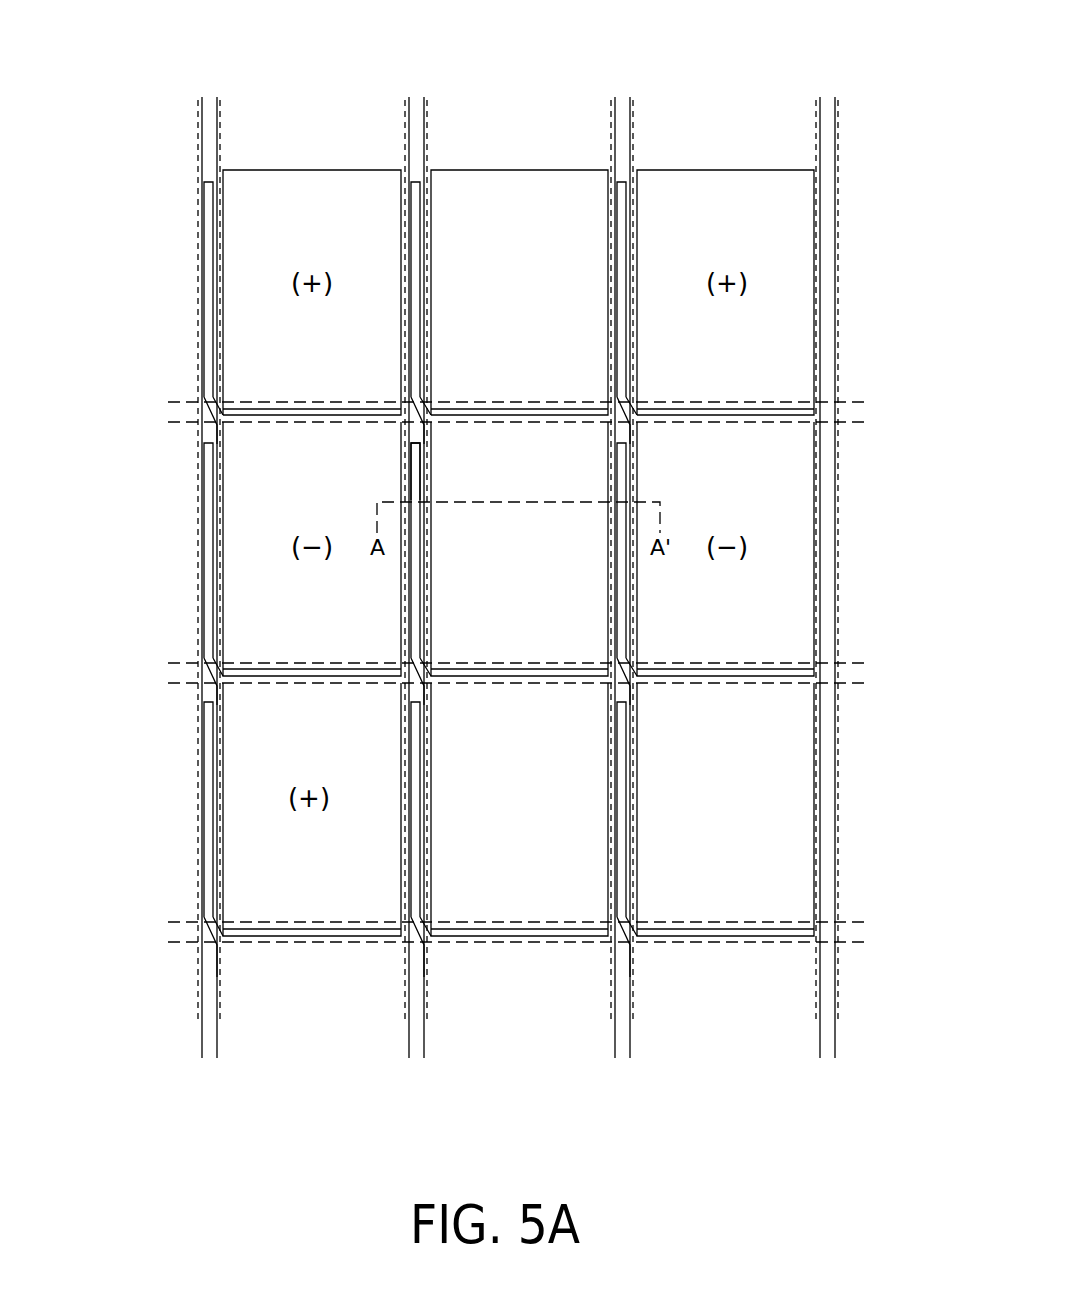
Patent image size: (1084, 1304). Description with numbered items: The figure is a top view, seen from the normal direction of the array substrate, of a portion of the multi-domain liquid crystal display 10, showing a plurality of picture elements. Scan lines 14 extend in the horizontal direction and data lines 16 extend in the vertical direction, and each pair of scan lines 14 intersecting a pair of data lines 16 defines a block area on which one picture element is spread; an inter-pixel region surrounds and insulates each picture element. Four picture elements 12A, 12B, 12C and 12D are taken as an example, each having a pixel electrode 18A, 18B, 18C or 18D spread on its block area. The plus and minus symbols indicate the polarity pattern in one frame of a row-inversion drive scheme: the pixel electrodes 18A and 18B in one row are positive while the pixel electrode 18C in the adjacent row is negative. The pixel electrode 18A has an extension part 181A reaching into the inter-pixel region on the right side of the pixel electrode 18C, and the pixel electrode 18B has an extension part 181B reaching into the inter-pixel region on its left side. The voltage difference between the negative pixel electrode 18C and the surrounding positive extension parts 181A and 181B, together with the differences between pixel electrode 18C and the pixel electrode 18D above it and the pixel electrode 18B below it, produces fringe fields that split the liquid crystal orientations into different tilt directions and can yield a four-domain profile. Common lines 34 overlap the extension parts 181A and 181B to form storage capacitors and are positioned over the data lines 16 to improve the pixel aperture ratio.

The multi-domain liquid crystal display 10 is at (933, 28).
The picture element 12A is at (703, 675).
The picture element 12B is at (495, 675).
The picture element 12C is at (512, 415).
The picture element 12D is at (513, 168).
The scan line 14 is at (178, 402).
The data line 16 is at (198, 168).
The pixel electrode 18A is at (793, 790).
The pixel electrode 18B is at (458, 765).
The pixel electrode 18C is at (484, 433).
The pixel electrode 18D is at (484, 193).
The extension part 181A is at (625, 493).
The extension part 181B is at (417, 492).
The common line 34 is at (417, 98).